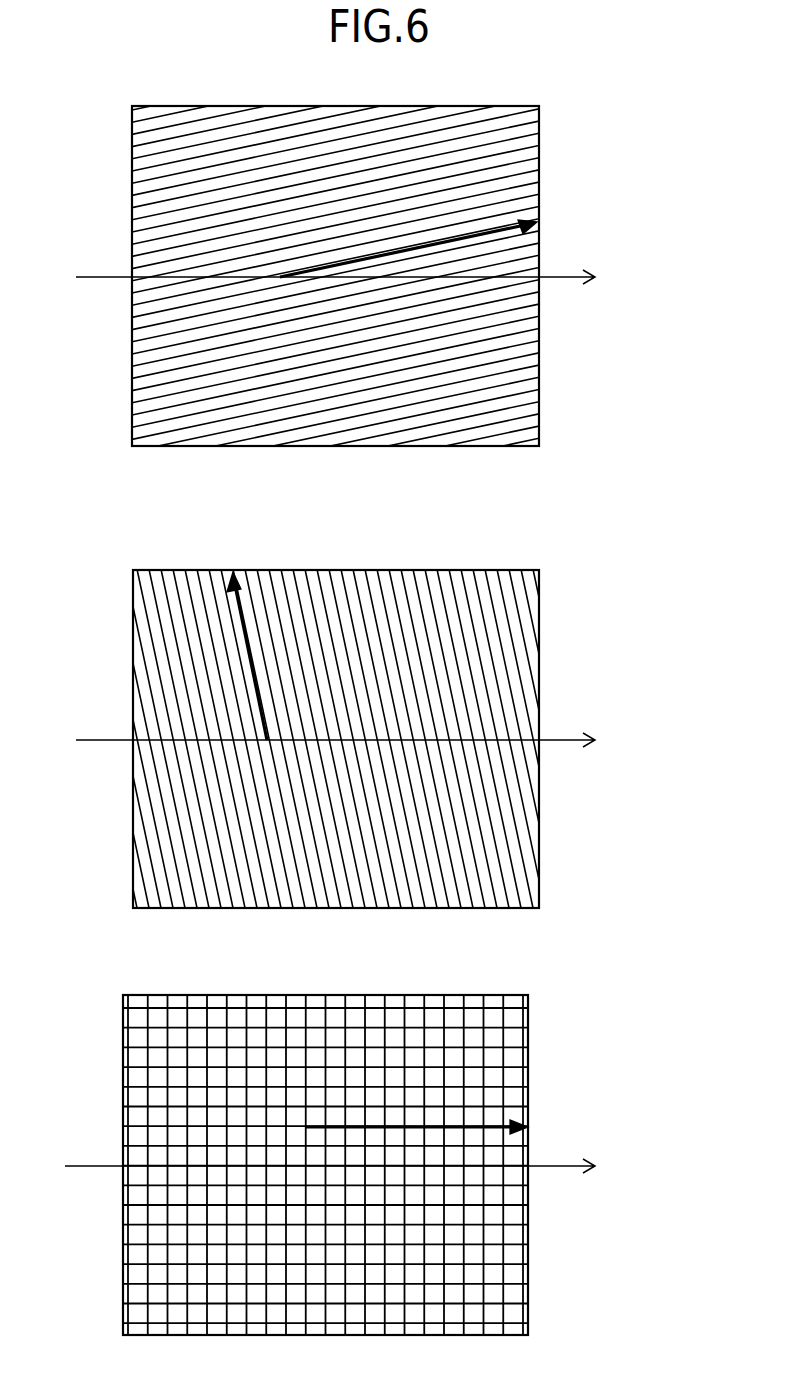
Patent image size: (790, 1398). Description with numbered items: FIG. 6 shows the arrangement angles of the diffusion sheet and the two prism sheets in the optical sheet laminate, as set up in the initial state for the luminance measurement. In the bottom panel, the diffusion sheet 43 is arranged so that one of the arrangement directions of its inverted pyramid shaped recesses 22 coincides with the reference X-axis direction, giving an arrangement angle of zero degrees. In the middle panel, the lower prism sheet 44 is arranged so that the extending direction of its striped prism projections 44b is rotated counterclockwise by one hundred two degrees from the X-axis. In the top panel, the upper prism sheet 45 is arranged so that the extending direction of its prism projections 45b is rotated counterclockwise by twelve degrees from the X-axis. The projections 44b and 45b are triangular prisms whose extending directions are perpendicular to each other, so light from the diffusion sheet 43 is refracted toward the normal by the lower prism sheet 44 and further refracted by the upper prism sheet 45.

The upper prism sheet 45 is at (378, 274).
The prism projections 45b is at (475, 355).
The lower prism sheet 44 is at (374, 724).
The prism projections 44b is at (483, 840).
The diffusion sheet 43 is at (373, 1165).
The recesses 22 is at (475, 1263).